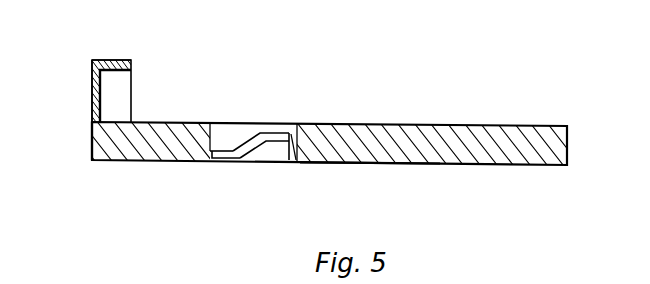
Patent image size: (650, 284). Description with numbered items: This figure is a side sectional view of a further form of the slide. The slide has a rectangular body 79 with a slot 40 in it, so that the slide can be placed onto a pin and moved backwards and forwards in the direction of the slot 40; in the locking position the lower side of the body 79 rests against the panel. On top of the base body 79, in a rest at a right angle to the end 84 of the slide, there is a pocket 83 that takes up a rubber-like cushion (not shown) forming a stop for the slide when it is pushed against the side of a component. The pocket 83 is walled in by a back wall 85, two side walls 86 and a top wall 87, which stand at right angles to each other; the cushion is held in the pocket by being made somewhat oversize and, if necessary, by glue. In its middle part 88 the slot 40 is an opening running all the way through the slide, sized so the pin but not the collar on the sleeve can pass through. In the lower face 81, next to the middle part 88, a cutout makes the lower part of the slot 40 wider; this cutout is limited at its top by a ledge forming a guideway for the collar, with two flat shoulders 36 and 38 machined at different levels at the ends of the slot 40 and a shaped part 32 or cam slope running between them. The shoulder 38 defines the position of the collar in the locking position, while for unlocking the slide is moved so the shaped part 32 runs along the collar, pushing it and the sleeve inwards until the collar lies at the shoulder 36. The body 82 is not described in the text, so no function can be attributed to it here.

The slot 40 is at (269, 119).
The carrier body 82 is at (373, 125).
The rectangular body 79 is at (413, 153).
The lower face 81 is at (369, 167).
The end of the slide 84 is at (89, 152).
The pocket 83 is at (138, 85).
The back wall 85 is at (97, 88).
The top wall 87 is at (116, 70).
The side walls 86 is at (124, 100).
The middle part of the slot 88 is at (226, 122).
The shoulder 36 is at (216, 162).
The shaped part 32 is at (252, 162).
The shoulder 38 is at (288, 162).